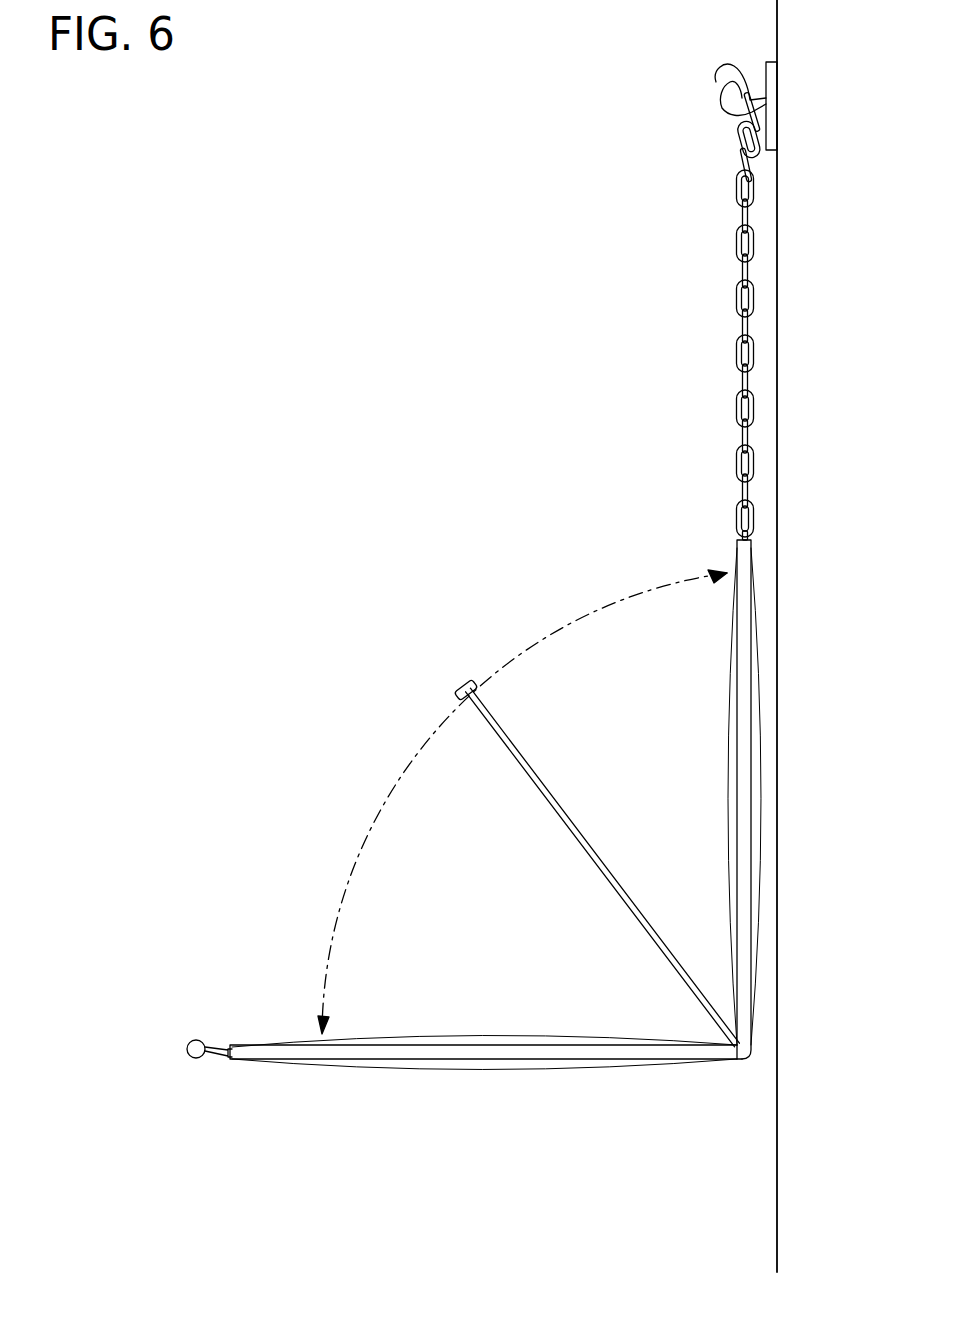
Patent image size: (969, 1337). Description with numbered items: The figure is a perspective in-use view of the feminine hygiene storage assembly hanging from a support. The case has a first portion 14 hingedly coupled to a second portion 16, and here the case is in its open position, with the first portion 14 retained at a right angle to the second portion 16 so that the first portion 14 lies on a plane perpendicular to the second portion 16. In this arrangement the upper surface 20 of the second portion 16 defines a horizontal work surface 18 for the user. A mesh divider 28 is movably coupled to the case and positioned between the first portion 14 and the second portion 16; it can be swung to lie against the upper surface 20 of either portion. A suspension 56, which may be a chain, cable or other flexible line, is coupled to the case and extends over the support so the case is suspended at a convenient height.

The first portion 14 is at (750, 524).
The second portion 16 is at (239, 1070).
The horizontal work surface 18 is at (287, 1028).
The upper surface 20 is at (737, 558).
The mesh divider 28 is at (466, 684).
The suspension 56 is at (746, 183).